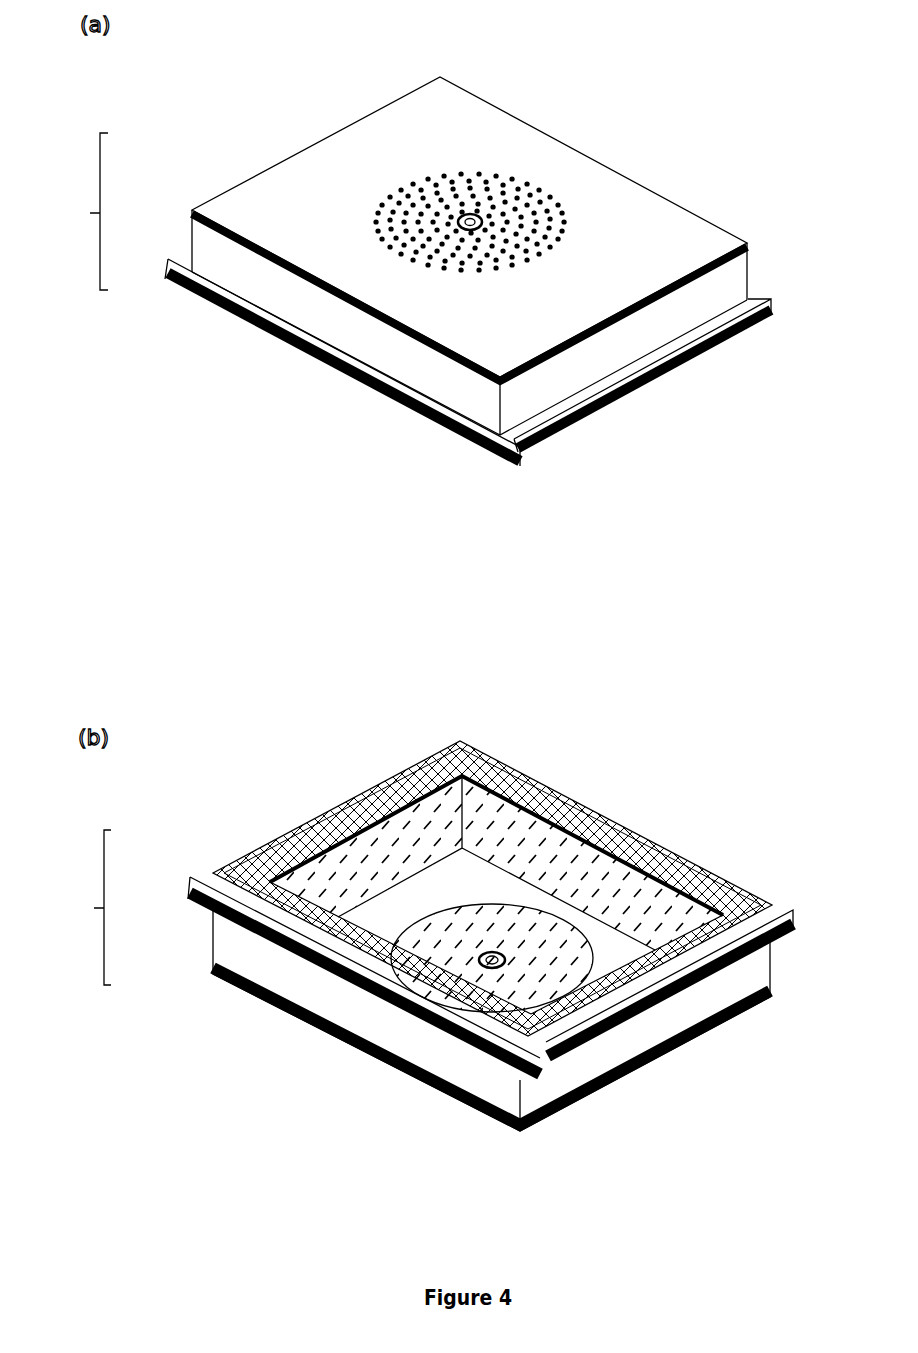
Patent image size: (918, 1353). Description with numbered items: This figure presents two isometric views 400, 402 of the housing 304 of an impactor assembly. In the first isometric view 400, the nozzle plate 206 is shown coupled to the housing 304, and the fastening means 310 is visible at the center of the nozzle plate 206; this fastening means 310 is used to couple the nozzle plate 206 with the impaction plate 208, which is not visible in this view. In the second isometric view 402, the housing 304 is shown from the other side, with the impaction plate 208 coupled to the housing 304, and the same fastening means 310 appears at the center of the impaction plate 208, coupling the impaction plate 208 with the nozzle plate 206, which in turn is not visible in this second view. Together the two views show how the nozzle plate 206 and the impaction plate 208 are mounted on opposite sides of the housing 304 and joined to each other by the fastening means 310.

The isometric view 400 is at (471, 254).
The isometric view 402 is at (493, 900).
The nozzle plate 206 is at (283, 181).
The impaction plate 208 is at (563, 973).
The housing 304 is at (79, 559).
The fastening means 310 is at (470, 214).